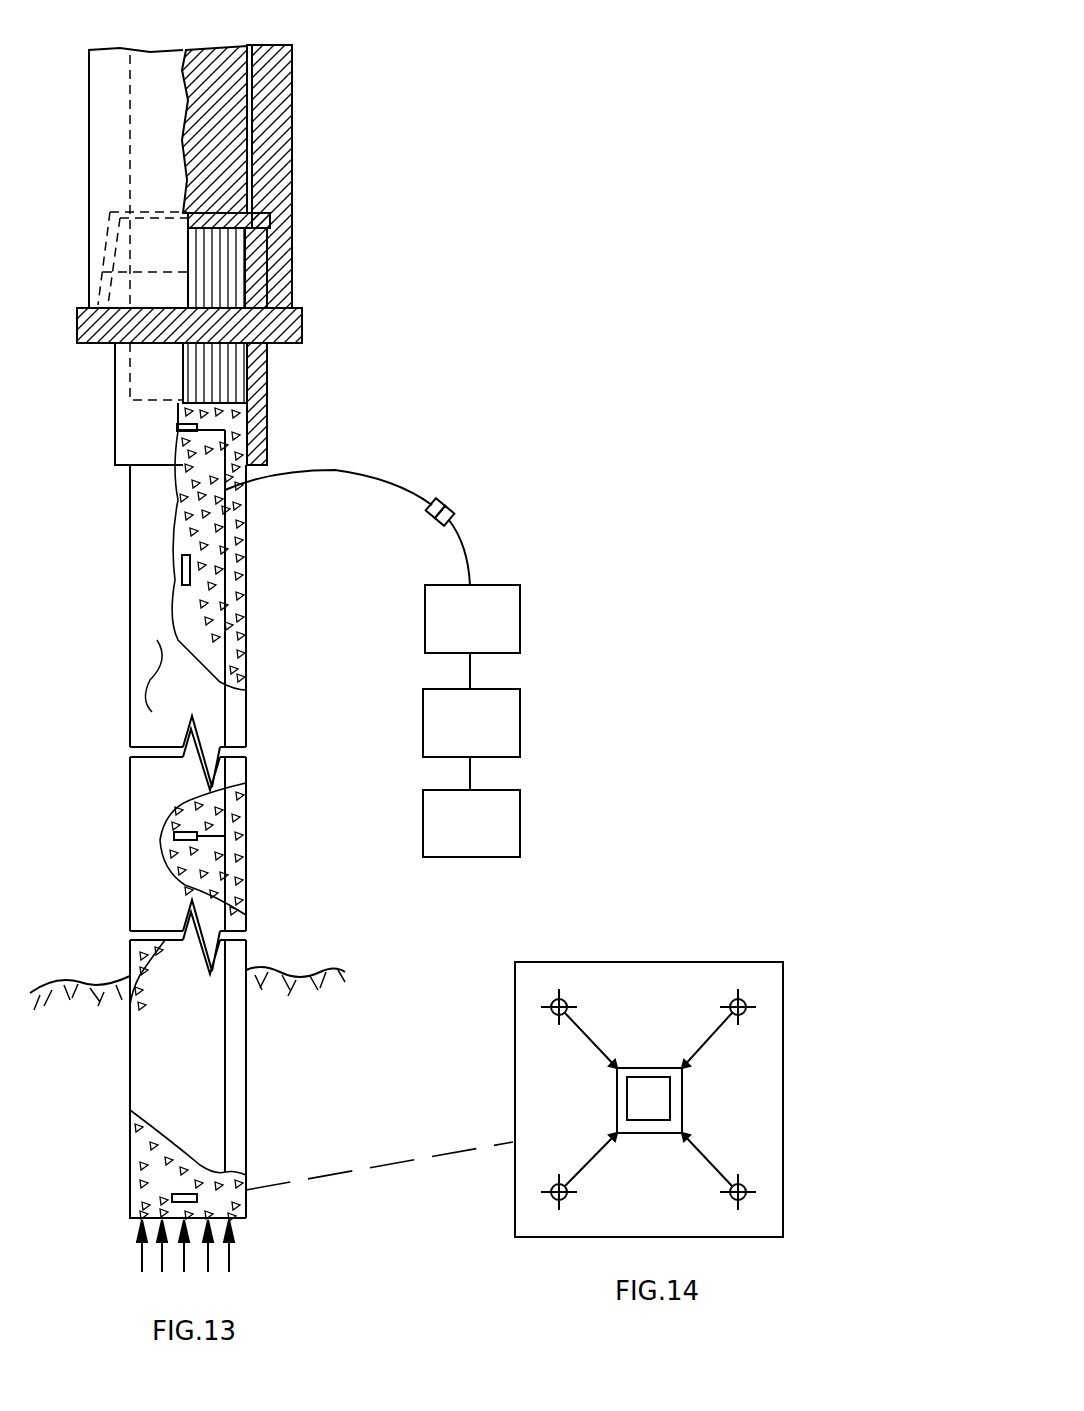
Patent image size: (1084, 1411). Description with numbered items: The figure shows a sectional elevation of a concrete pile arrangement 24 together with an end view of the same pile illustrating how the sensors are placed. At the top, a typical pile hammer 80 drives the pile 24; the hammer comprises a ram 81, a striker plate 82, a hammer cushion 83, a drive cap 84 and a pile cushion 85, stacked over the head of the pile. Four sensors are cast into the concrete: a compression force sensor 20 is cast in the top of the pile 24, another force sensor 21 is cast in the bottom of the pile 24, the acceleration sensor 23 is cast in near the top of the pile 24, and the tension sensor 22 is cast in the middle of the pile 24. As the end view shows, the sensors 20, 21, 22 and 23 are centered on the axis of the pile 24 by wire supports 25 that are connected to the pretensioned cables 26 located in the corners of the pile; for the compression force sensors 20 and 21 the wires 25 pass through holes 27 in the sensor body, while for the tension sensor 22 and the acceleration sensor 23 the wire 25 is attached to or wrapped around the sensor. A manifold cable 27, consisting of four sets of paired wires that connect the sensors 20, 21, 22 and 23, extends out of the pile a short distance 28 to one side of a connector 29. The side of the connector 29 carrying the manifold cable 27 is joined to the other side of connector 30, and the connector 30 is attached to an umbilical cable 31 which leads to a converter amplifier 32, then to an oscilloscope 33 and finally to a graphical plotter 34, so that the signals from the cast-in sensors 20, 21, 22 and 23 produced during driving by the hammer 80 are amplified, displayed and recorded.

In FIG. 13, the compression force sensor 20 is at (177, 428).
In FIG. 14, the compression force sensor 20 is at (742, 1016).
In FIG. 13, the force sensor 21 is at (172, 1198).
In FIG. 14, the force sensor 21 is at (742, 1016).
In FIG. 13, the tension sensor 22 is at (174, 836).
In FIG. 14, the tension sensor 22 is at (742, 1016).
In FIG. 13, the acceleration sensor 23 is at (182, 570).
In FIG. 14, the acceleration sensor 23 is at (645, 1070).
In FIG. 13, the concrete pile arrangement 24 is at (150, 690).
In FIG. 14, the wire supports 25 is at (592, 1045).
In FIG. 14, the pretensioned cables 26 is at (556, 1190).
In FIG. 13, the manifold cable 27 is at (246, 690).
In FIG. 14, the manifold cable 27 is at (681, 1073).
In FIG. 13, the short distance 28 is at (336, 470).
In FIG. 13, the connector 29 is at (428, 514).
In FIG. 13, the connector 30 is at (452, 506).
In FIG. 13, the umbilical cable 31 is at (470, 553).
In FIG. 13, the converter amplifier 32 is at (520, 588).
In FIG. 13, the oscilloscope 33 is at (520, 692).
In FIG. 13, the graphical plotter 34 is at (520, 792).
In FIG. 13, the pile hammer 80 is at (292, 130).
In FIG. 13, the ram 81 is at (247, 47).
In FIG. 13, the striker plate 82 is at (270, 222).
In FIG. 13, the hammer cushion 83 is at (236, 290).
In FIG. 13, the drive cap 84 is at (302, 340).
In FIG. 13, the pile cushion 85 is at (236, 388).